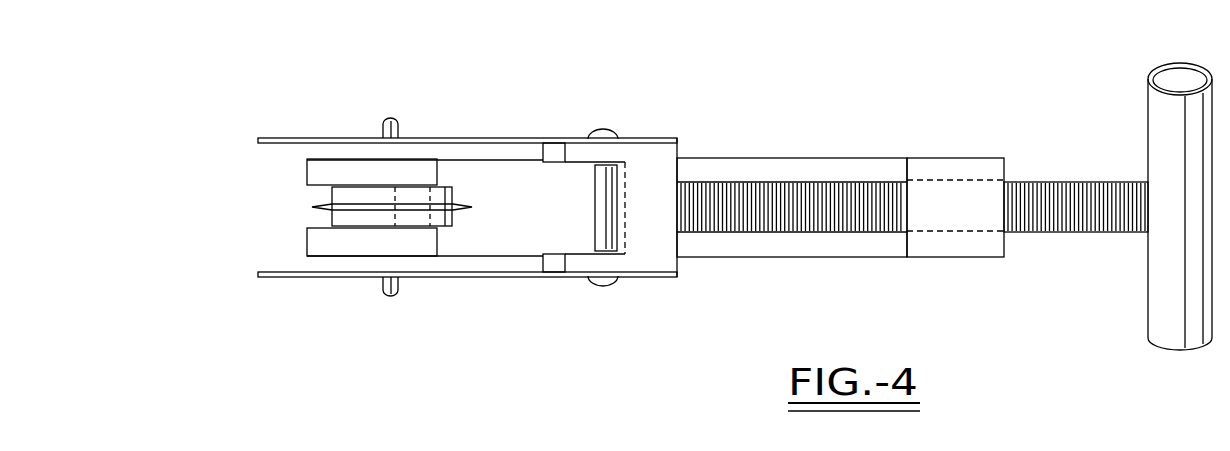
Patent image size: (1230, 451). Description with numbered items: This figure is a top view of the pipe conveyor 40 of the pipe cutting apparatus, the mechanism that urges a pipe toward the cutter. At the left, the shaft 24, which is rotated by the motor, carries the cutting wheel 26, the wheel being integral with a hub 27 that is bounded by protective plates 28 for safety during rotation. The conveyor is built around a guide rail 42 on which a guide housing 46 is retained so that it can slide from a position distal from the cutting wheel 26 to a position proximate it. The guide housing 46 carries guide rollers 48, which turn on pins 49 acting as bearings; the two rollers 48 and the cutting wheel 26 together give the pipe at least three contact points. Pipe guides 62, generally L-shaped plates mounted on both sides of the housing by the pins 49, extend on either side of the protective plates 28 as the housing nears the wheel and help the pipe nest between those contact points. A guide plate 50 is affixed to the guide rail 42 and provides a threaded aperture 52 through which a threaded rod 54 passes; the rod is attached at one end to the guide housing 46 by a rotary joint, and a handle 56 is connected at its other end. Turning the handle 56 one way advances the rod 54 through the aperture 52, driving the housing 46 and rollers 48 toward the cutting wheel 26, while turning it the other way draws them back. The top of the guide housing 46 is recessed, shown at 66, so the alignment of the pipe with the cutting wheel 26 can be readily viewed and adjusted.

The shaft 24 is at (386, 286).
The cutting wheel 26 is at (302, 207).
The hub 27 is at (452, 220).
The protective plates 28 is at (307, 171).
The pipe conveyor 40 is at (886, 76).
The guide rail 42 is at (830, 158).
The guide housing 46 is at (672, 158).
The guide rollers 48 is at (596, 184).
The pins 49 is at (610, 131).
The guide plate 50 is at (938, 160).
The threaded aperture 52 is at (957, 230).
The threaded rod 54 is at (757, 185).
The handle 56 is at (1155, 93).
The pipe guides 62 is at (473, 138).
The recessed top 66 is at (625, 254).